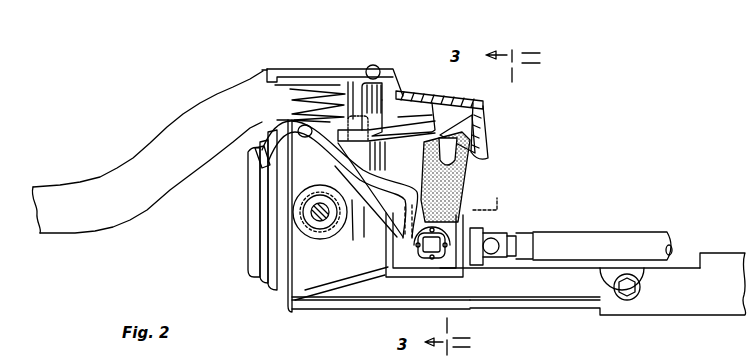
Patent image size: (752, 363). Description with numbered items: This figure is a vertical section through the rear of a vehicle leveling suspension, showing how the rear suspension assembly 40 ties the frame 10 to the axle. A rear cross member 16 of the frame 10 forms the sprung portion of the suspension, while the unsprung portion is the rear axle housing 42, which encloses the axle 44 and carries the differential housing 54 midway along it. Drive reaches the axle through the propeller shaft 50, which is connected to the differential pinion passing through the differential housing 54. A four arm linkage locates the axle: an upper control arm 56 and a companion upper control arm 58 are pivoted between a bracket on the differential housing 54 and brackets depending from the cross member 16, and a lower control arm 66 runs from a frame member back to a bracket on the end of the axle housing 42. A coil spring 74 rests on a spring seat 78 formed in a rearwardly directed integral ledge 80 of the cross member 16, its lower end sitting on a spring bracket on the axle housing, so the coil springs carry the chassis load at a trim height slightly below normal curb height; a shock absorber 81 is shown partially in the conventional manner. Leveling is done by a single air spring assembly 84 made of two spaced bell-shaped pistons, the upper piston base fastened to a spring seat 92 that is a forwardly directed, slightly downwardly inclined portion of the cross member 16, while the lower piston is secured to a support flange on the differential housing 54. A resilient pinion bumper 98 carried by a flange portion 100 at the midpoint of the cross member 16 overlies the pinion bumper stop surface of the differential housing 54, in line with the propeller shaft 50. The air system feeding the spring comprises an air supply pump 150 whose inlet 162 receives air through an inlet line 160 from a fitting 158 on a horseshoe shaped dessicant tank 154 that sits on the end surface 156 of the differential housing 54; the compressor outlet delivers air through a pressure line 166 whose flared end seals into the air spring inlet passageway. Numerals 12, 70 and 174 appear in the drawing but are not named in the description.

The frame 10 is at (133, 153).
The support bar 12 is at (706, 256).
The cross member 16 is at (425, 93).
The rear suspension assembly 40 is at (390, 82).
The rear axle housing 42 is at (311, 228).
The axle 44 is at (325, 222).
The propeller shaft 50 is at (640, 232).
The differential housing 54 is at (298, 283).
The upper control arm 56 is at (396, 118).
The upper control arm 58 is at (334, 118).
The lower control arm 66 is at (530, 284).
The bolt 70 is at (636, 287).
The coil spring 74 is at (292, 95).
The spring seat 78 is at (301, 76).
The integral ledge 80 is at (276, 69).
The shock absorber 81 is at (372, 65).
The air spring assembly 84 is at (480, 225).
The spring seat 92 is at (456, 118).
The pinion bumper 98 is at (443, 165).
The flange portion 100 is at (441, 133).
The air supply pump 150 is at (453, 228).
The dessicant tank 154 is at (264, 196).
The end surface 156 is at (272, 222).
The fitting 158 is at (250, 160).
The inlet line 160 is at (355, 186).
The inlet 162 is at (420, 240).
The pressure line 166 is at (462, 197).
The conduit 174 is at (383, 162).